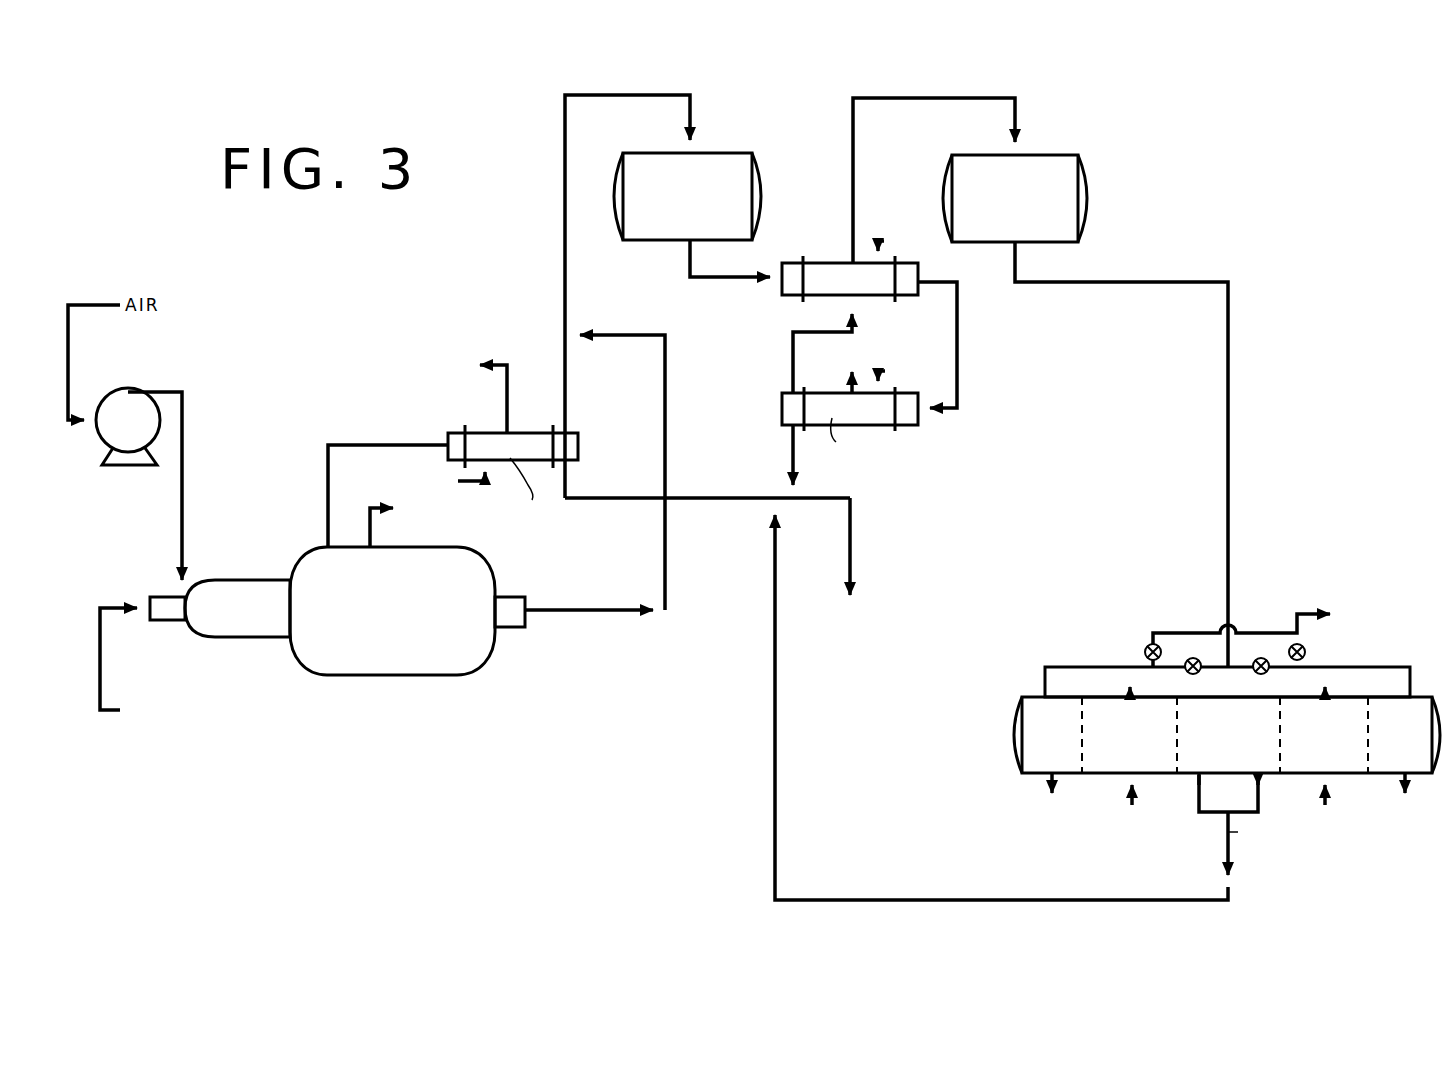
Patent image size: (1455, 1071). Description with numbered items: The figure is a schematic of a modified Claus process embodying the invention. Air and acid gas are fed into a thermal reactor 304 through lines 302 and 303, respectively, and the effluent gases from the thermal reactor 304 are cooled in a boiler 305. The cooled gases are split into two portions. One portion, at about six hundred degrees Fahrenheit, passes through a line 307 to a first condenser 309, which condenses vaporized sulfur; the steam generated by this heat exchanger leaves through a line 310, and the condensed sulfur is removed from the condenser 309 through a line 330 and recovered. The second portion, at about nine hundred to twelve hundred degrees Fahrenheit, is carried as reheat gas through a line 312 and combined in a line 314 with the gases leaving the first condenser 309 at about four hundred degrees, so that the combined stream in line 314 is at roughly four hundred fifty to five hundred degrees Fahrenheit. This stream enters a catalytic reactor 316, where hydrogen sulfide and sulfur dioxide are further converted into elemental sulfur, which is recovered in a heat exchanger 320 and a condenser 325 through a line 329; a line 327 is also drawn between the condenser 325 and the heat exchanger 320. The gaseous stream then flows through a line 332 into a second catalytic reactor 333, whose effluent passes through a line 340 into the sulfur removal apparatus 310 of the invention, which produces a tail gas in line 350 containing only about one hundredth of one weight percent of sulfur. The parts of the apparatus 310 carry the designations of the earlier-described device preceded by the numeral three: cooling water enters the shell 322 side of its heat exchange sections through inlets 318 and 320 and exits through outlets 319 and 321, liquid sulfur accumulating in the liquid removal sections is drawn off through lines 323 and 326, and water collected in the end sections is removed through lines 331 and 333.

The line 302 is at (182, 482).
The line 303 is at (104, 660).
The thermal reactor 304 is at (241, 578).
The boiler 305 is at (420, 660).
The line from boiler to condenser No. 1 307 is at (327, 522).
The first condenser 309 is at (493, 430).
The sulfur removal apparatus 310 is at (508, 396).
The line 312 is at (548, 620).
The line 314 is at (563, 243).
The catalytic reactor 316 is at (738, 150).
The inlet 318 is at (720, 278).
The outlet 319 is at (1138, 683).
The heat exchanger 320 is at (823, 260).
The outlet 321 is at (1320, 683).
The shell 322 is at (957, 328).
The line 323 is at (1197, 793).
The condenser 325 is at (780, 408).
The line 326 is at (1260, 790).
The steam line 327 is at (792, 360).
The line 329 is at (792, 450).
The line 330 is at (752, 500).
The line 331 is at (852, 562).
The line 332 is at (850, 153).
The second catalytic reactor 333 is at (1048, 152).
The line 340 is at (1227, 610).
The tail gas line 350 is at (1305, 647).